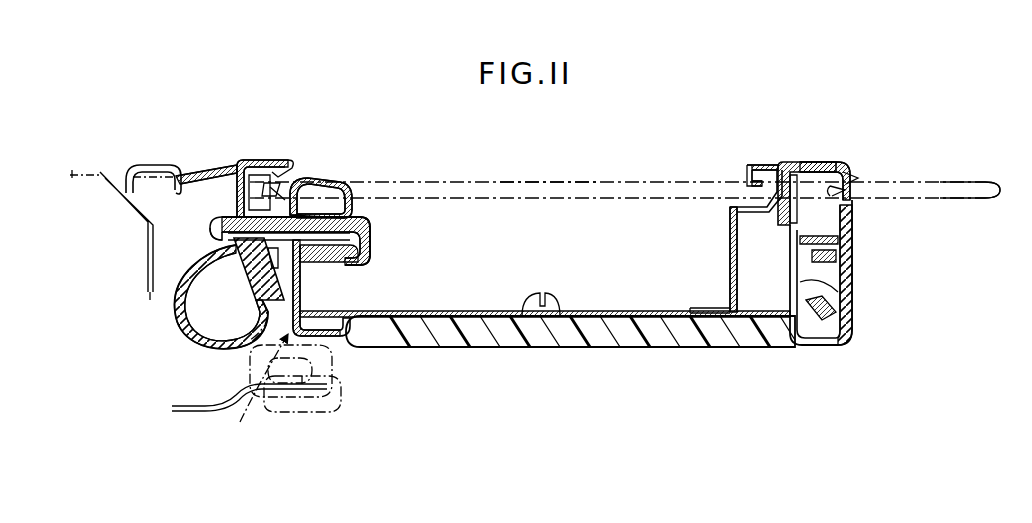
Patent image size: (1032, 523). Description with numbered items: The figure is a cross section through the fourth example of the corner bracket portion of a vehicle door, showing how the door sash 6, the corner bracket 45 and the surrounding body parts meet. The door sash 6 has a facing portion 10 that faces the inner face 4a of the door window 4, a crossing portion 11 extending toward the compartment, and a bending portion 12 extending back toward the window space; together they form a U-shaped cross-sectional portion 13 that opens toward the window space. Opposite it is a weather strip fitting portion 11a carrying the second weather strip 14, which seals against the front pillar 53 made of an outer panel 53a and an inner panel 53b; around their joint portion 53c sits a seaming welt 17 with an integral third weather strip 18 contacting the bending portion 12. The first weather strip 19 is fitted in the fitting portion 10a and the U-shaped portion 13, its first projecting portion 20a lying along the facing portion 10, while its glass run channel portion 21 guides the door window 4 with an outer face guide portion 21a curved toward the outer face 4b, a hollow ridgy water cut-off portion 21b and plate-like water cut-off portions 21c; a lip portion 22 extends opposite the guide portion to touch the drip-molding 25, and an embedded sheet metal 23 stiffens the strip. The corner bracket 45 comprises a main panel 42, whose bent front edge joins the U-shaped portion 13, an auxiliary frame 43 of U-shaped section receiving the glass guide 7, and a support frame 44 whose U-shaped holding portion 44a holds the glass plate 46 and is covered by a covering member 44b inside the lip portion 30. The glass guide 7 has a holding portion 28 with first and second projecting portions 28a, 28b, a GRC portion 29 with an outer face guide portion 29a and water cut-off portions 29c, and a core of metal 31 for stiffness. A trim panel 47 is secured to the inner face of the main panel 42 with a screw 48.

The door window 4 is at (962, 180).
The inner face of the door window 4a is at (965, 199).
The outer face of the door window 4b is at (988, 181).
The door sash 6 is at (260, 386).
The glass guide 7 is at (866, 220).
The facing portion 10 is at (366, 221).
The fitting portion 10a is at (216, 236).
The crossing portion 11 is at (264, 296).
The weather strip fitting portion 11a is at (264, 325).
The bending portion 12 is at (334, 362).
The U-shaped cross-sectional portion 13 is at (318, 258).
The second weather strip 14 is at (190, 322).
The seaming welt 17 is at (330, 412).
The third weather strip 18 is at (348, 338).
The first weather strip 19 is at (374, 250).
The first projecting portion 20a is at (348, 253).
The glass run channel portion 21 is at (256, 162).
The outer face guide portion 21a is at (275, 175).
The hollow and ridgy water cut-off portion 21b is at (326, 185).
The projecting/plate-like water cut-off portions 21c is at (276, 196).
The lip portion 22 is at (206, 168).
The sheet metal 23 is at (374, 230).
The drip-molding 25 is at (136, 166).
The holding portion 28 is at (855, 276).
The first projecting portion 28a is at (855, 263).
The second projecting portion 28b is at (838, 322).
The GRC portion 29 is at (834, 162).
The outer face guide portion 29a is at (850, 175).
The water cut-off portions 29c is at (846, 194).
The lip portion 30 is at (772, 162).
The core of metal 31 is at (795, 185).
The main panel 42 is at (616, 311).
The auxiliary frame 43 is at (820, 290).
The support frame 44 is at (730, 236).
The holding portion 44a is at (756, 204).
The covering member 44b is at (748, 186).
The corner bracket 45 is at (668, 305).
The glass plate 46 is at (553, 181).
The trim panel 47 is at (578, 347).
The screw 48 is at (546, 292).
The front pillar 53 is at (74, 160).
The outer panel 53a is at (150, 285).
The inner panel 53b is at (198, 402).
The joint portion 53c is at (302, 405).